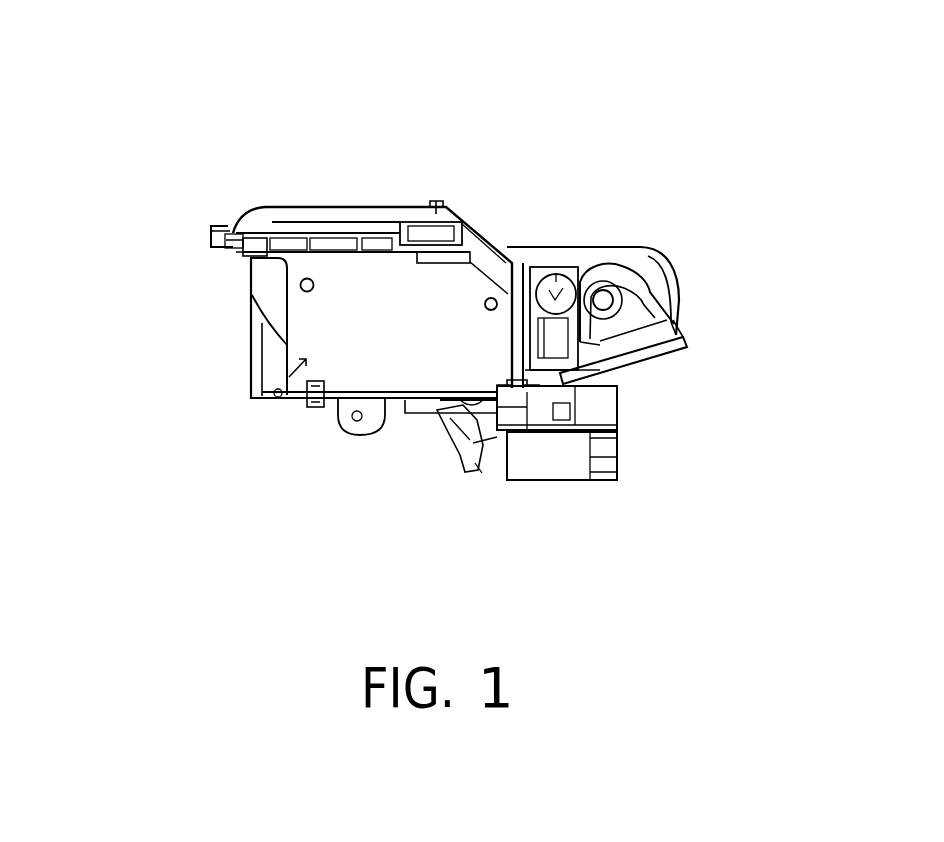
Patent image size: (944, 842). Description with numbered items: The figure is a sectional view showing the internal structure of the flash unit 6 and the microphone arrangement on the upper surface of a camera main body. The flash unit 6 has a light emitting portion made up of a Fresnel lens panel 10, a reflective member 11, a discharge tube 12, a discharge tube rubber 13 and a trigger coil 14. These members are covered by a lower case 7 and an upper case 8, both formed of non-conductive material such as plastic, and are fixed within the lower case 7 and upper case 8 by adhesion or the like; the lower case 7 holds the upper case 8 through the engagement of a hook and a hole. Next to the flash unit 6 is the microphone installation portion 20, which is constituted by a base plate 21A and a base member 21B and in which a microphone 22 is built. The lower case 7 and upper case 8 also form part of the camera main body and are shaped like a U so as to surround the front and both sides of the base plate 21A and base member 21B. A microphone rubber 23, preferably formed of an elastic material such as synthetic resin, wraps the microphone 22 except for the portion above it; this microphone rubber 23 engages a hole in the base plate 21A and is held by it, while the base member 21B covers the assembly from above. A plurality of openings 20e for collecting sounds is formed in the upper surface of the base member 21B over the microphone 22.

The flash unit 6 is at (140, 310).
The lower case 7 is at (617, 390).
The upper case 8 is at (543, 248).
The Fresnel lens panel 10 is at (630, 320).
The reflective member 11 is at (662, 308).
The discharge tube 12 is at (638, 290).
The discharge tube rubber 13 is at (618, 284).
The trigger coil 14 is at (562, 283).
The microphone installation portion 20 is at (287, 205).
The openings 20e is at (440, 208).
The base plate 21A is at (263, 400).
The base member 21B is at (217, 223).
The microphone 22 is at (425, 220).
The microphone rubber 23 is at (388, 232).